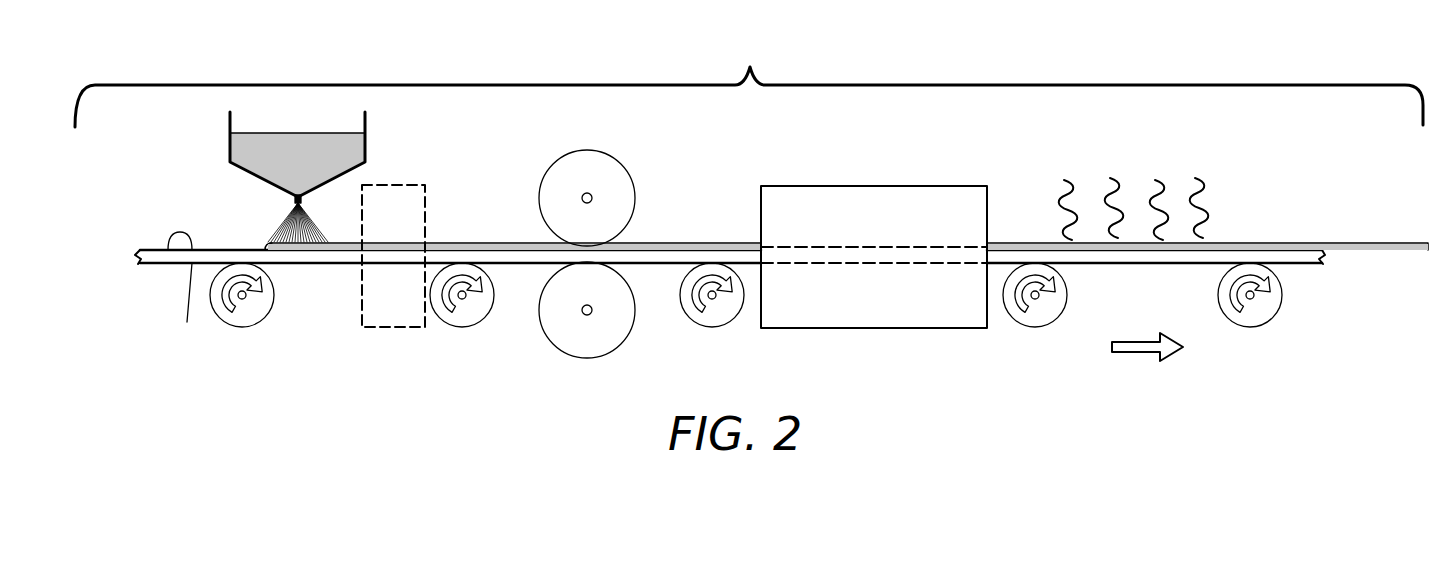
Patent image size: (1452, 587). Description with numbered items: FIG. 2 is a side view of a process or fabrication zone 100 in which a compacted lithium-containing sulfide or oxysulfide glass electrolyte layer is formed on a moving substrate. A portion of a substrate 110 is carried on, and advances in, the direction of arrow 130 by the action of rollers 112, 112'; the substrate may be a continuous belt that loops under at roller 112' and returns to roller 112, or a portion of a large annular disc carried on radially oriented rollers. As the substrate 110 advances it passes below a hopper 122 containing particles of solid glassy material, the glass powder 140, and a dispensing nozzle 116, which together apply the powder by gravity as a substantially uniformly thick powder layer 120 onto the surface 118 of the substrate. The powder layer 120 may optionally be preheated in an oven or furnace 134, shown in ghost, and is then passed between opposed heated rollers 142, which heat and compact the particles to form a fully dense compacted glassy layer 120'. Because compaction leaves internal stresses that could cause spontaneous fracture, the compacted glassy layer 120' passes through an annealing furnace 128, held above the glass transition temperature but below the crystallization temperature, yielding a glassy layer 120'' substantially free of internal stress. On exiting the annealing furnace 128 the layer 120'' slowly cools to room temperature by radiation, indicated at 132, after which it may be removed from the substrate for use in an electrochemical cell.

The fabrication zone 100 is at (751, 66).
The substrate 110 is at (150, 250).
The rollers 112 is at (644, 334).
The roller 112' is at (1294, 318).
The dispensing nozzle 116 is at (293, 200).
The surface 118 is at (187, 293).
The powder layer 120 is at (846, 198).
The compacted glassy layer 120' is at (712, 208).
The glassy layer 120'' is at (1286, 207).
The hopper 122 is at (367, 137).
The annealing furnace 128 is at (960, 186).
The arrow 130 is at (1163, 334).
The radiation 132 is at (1166, 186).
The oven or furnace 134 is at (395, 328).
The glass powder 140 is at (293, 133).
The heated rollers 142 is at (622, 162).